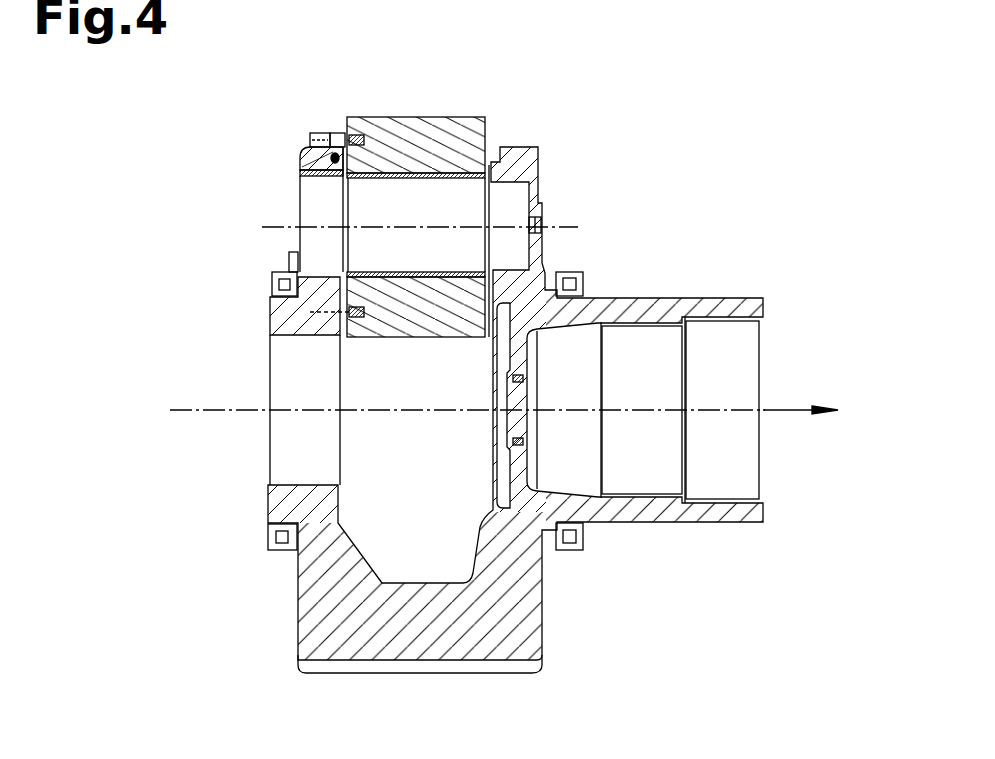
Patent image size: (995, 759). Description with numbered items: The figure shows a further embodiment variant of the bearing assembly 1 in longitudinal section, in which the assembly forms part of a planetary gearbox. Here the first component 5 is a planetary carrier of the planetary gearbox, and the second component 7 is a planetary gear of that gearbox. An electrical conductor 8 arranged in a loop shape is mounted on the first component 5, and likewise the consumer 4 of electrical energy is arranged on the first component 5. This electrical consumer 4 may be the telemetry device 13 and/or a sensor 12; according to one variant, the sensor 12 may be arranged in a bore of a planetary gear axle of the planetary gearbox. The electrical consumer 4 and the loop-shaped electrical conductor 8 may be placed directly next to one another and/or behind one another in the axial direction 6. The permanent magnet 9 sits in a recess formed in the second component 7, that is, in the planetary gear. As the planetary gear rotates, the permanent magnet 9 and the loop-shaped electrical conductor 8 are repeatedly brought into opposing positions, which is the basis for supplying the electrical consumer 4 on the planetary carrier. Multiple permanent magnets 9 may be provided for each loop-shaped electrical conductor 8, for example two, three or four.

The bearing assembly 1 is at (818, 75).
The consumer of electrical energy 4 is at (309, 130).
The first component 5 is at (289, 153).
The axial direction 6 is at (791, 407).
The second component 7 is at (494, 122).
The electrical conductor 8 is at (339, 130).
The permanent magnet 9 is at (363, 134).
The sensor 12 is at (300, 168).
The telemetry device 13 is at (321, 130).